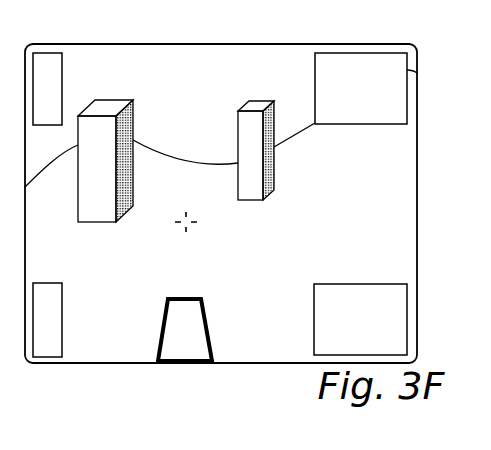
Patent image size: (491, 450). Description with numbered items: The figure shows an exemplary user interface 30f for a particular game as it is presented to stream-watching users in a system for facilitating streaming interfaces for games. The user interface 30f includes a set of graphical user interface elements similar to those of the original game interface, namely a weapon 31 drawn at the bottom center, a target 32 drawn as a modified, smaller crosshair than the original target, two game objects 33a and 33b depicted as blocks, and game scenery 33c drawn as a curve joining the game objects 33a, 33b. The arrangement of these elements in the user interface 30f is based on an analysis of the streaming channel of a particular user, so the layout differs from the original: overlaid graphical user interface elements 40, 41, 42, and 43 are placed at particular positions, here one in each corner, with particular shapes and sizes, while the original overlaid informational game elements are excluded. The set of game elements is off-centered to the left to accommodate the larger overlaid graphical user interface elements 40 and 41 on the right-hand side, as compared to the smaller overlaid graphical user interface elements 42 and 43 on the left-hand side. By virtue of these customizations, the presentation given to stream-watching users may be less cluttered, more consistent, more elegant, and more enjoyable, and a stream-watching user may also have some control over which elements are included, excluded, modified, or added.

The user interface 30f is at (221, 191).
The weapon 31 is at (185, 330).
The target 32 is at (193, 229).
The game object 33a is at (158, 173).
The game object 33b is at (276, 163).
The game scenery 33c is at (51, 178).
The overlaid graphical user interface element 40 is at (366, 88).
The overlaid graphical user interface element 41 is at (360, 319).
The overlaid graphical user interface element 42 is at (47, 89).
The overlaid graphical user interface element 43 is at (47, 320).